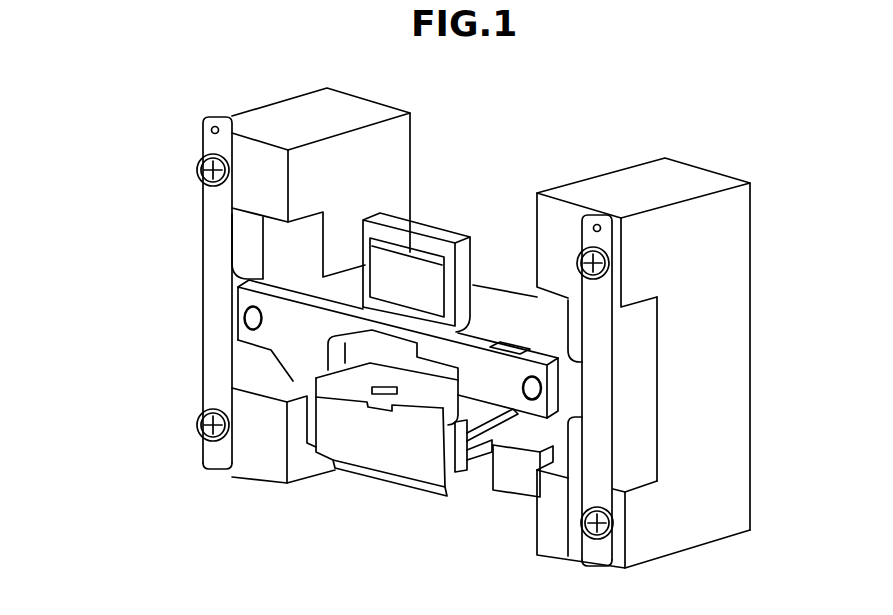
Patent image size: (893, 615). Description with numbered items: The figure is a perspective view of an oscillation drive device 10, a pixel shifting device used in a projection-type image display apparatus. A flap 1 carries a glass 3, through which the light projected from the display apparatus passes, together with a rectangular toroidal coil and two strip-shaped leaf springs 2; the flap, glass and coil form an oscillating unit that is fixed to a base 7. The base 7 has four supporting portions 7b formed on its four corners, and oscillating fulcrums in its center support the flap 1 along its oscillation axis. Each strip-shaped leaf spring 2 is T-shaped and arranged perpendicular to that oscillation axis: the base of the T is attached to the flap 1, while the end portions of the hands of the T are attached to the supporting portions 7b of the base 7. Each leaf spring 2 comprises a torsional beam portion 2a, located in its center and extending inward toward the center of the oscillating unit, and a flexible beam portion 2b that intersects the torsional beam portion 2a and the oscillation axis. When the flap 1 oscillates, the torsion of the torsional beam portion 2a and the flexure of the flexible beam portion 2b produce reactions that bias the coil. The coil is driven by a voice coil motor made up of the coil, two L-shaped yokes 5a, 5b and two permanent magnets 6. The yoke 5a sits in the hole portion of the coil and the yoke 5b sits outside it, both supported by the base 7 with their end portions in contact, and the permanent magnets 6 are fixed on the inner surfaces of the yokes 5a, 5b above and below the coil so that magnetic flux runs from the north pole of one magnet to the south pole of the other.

The flap 1 is at (308, 348).
The strip-shaped leaf spring 2 is at (218, 305).
The torsional beam portion 2a is at (570, 383).
The flexible beam portion 2b is at (218, 250).
The glass 3 is at (398, 282).
The L-shaped yoke 5a is at (350, 393).
The L-shaped yoke 5b is at (402, 452).
The permanent magnet 6 is at (457, 420).
The base 7 is at (708, 473).
The supporting portion 7b is at (257, 176).
The oscillation drive device 10 is at (618, 143).